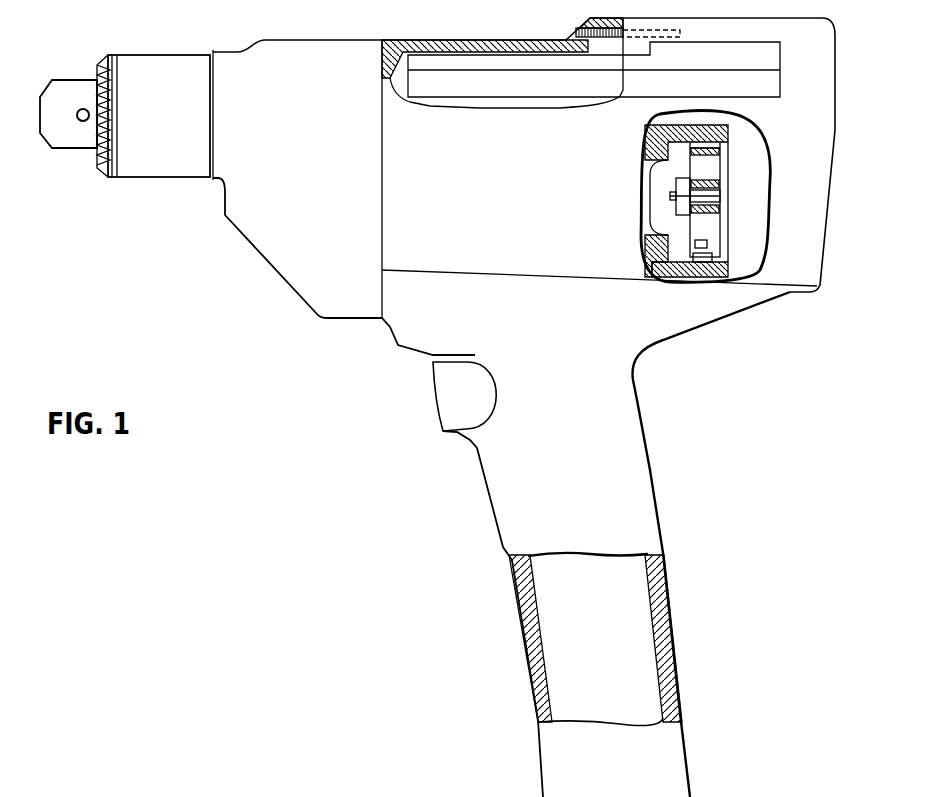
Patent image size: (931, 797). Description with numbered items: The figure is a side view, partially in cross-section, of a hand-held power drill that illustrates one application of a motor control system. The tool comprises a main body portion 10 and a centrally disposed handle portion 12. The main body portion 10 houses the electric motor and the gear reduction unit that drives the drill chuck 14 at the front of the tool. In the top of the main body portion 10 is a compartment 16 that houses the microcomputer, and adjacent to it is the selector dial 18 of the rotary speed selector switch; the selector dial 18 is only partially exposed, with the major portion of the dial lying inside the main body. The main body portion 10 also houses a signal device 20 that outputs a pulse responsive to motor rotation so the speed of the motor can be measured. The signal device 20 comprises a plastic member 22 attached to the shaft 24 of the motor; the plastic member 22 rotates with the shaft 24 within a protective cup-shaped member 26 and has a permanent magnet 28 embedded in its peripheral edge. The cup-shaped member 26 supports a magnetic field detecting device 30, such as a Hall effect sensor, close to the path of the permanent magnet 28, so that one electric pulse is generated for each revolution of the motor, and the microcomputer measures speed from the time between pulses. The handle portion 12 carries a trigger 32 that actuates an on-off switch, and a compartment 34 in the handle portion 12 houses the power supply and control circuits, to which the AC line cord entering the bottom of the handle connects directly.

The main body portion 10 is at (343, 38).
The handle portion 12 is at (658, 470).
The drill chuck 14 is at (158, 68).
The compartment 16 is at (547, 94).
The selector dial 18 is at (577, 35).
The signal device 20 is at (741, 179).
The plastic member 22 is at (708, 168).
The shaft 24 is at (700, 200).
The cup-shaped member 26 is at (712, 128).
The permanent magnet 28 is at (705, 242).
The magnetic field detecting device 30 is at (720, 268).
The trigger 32 is at (443, 392).
The compartment 34 is at (614, 640).